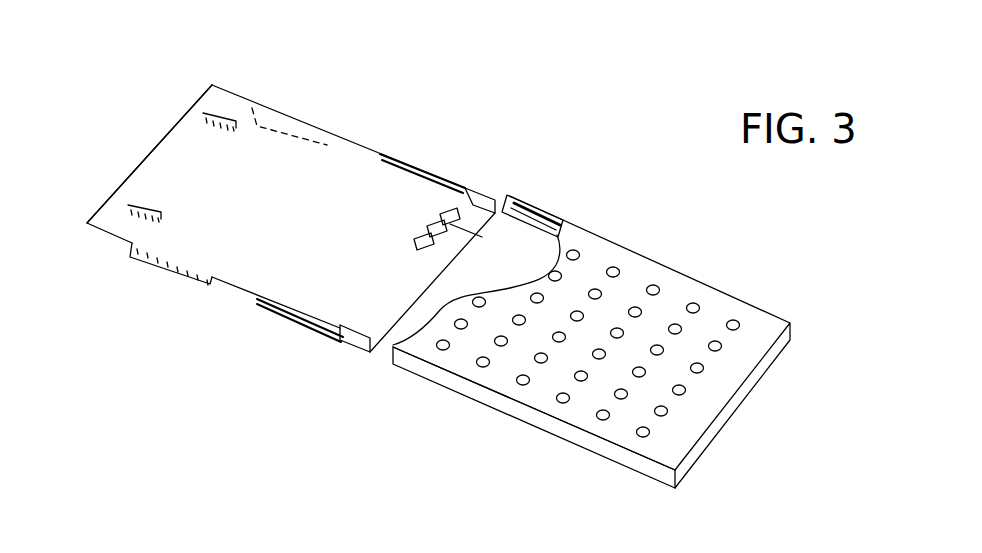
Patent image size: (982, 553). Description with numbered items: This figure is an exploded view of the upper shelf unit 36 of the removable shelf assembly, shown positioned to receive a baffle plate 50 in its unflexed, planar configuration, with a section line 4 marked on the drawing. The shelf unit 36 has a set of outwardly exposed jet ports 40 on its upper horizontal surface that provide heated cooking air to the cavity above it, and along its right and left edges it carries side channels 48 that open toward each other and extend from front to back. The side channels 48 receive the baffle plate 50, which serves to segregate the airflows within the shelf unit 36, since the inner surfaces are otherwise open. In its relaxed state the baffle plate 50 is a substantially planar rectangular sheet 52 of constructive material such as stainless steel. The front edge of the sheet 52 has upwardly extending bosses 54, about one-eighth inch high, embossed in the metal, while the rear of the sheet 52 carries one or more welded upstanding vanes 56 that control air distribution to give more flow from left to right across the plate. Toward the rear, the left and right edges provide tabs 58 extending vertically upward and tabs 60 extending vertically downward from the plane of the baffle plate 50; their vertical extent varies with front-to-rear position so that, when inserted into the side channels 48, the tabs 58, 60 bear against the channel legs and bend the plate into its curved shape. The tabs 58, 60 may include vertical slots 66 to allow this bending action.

The section line 4- 4 is at (507, 190).
The upper shelf unit 36 is at (690, 279).
The jet ports 40 is at (578, 250).
The side channels 48 is at (527, 200).
The baffle plate 50 is at (325, 170).
The sheet 52 is at (172, 163).
The bosses 54 is at (197, 110).
The upstanding vanes 56 is at (473, 247).
The tabs 58 is at (488, 192).
The tabs 60 is at (160, 268).
The vertical slots 66 is at (462, 203).